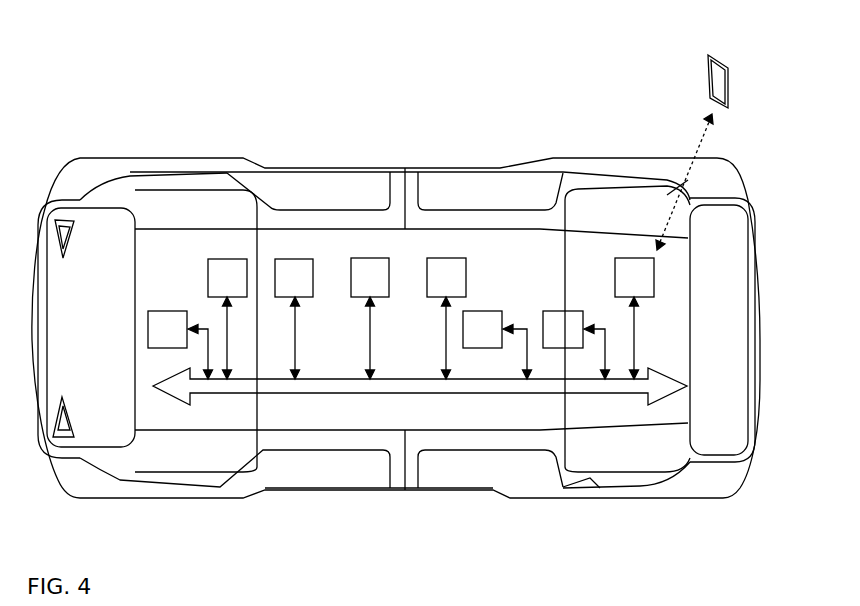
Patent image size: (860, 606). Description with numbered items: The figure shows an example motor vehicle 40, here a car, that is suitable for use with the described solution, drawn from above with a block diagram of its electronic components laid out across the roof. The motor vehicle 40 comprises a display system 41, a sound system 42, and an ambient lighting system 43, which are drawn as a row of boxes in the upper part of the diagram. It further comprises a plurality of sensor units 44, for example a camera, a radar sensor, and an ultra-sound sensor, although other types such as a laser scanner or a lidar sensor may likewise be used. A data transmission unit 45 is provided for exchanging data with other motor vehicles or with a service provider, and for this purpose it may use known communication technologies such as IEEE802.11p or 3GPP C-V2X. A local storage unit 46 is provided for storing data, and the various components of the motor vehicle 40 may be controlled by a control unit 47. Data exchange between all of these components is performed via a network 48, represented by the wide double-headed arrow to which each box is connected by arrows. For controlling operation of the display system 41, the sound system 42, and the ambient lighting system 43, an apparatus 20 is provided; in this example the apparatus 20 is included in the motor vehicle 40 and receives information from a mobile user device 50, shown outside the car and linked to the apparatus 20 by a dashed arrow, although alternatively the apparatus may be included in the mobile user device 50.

The apparatus 20 is at (655, 280).
The motor vehicle 40 is at (623, 160).
The display system 41 is at (444, 258).
The sound system 42 is at (371, 258).
The ambient lighting system 43 is at (295, 259).
The sensor unit 44 is at (555, 311).
The data transmission unit 45 is at (167, 311).
The local storage unit 46 is at (482, 348).
The control unit 47 is at (228, 259).
The network 48 is at (358, 393).
The mobile user device 50 is at (728, 85).